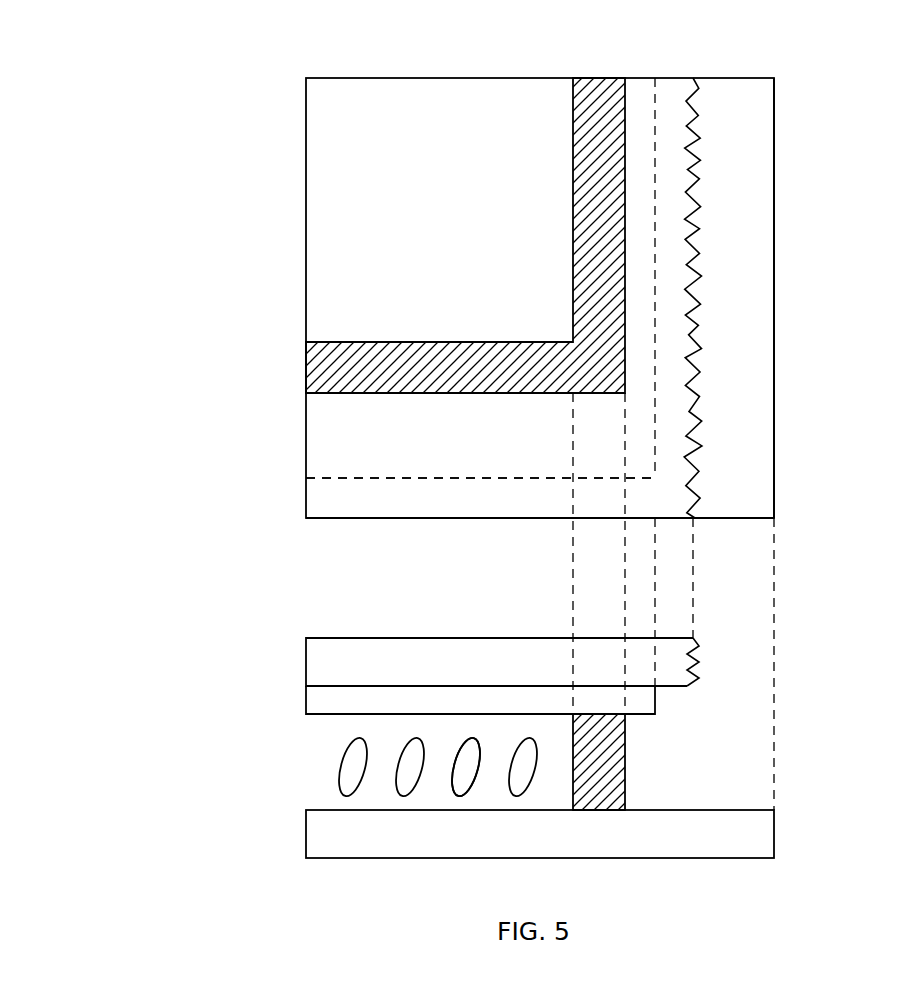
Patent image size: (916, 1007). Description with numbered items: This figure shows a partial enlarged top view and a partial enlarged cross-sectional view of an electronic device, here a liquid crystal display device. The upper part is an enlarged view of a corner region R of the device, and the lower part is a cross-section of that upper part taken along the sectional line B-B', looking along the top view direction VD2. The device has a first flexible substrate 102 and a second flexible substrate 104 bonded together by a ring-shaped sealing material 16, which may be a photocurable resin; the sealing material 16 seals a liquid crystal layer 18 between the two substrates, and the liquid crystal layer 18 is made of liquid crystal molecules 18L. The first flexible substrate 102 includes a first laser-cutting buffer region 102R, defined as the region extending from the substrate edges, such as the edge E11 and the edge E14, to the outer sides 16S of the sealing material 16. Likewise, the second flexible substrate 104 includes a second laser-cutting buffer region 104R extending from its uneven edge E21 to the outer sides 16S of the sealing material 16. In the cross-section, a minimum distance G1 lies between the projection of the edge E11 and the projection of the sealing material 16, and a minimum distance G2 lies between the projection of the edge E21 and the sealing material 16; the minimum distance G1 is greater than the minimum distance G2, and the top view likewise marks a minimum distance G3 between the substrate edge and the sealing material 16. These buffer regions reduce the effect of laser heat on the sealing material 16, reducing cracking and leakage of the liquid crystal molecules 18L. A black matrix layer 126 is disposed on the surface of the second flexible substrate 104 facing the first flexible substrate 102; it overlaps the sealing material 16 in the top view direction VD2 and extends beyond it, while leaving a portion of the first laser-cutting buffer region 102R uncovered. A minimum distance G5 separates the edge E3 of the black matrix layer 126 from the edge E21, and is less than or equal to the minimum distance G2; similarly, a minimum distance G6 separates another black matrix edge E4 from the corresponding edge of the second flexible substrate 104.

The first flexible substrate 102 is at (758, 423).
The second flexible substrate 104 is at (323, 666).
The second laser-cutting buffer region 104R is at (676, 107).
The black matrix layer 126 is at (323, 700).
The sealing material 16 is at (605, 150).
The outer side of the sealing material 16S is at (625, 812).
The liquid crystal layer 18 is at (375, 797).
The liquid crystal molecules 18L is at (462, 790).
The first laser-cutting buffer region 102R is at (740, 458).
The edge of the black matrix layer E3 is at (655, 357).
The edge of the black matrix layer E4 is at (308, 472).
The edge of the first flexible substrate E11 is at (774, 383).
The edge of the first flexible substrate E14 is at (322, 536).
The edge of the second flexible substrate E21 is at (693, 231).
The minimum distance G1 is at (625, 319).
The minimum distance G2 is at (625, 167).
The minimum distance G3 is at (396, 393).
The minimum distance G5 is at (655, 696).
The minimum distance G6 is at (364, 393).
The sectional line B-B' B is at (828, 257).
The region R is at (802, 78).
The top view direction VD2 is at (89, 488).